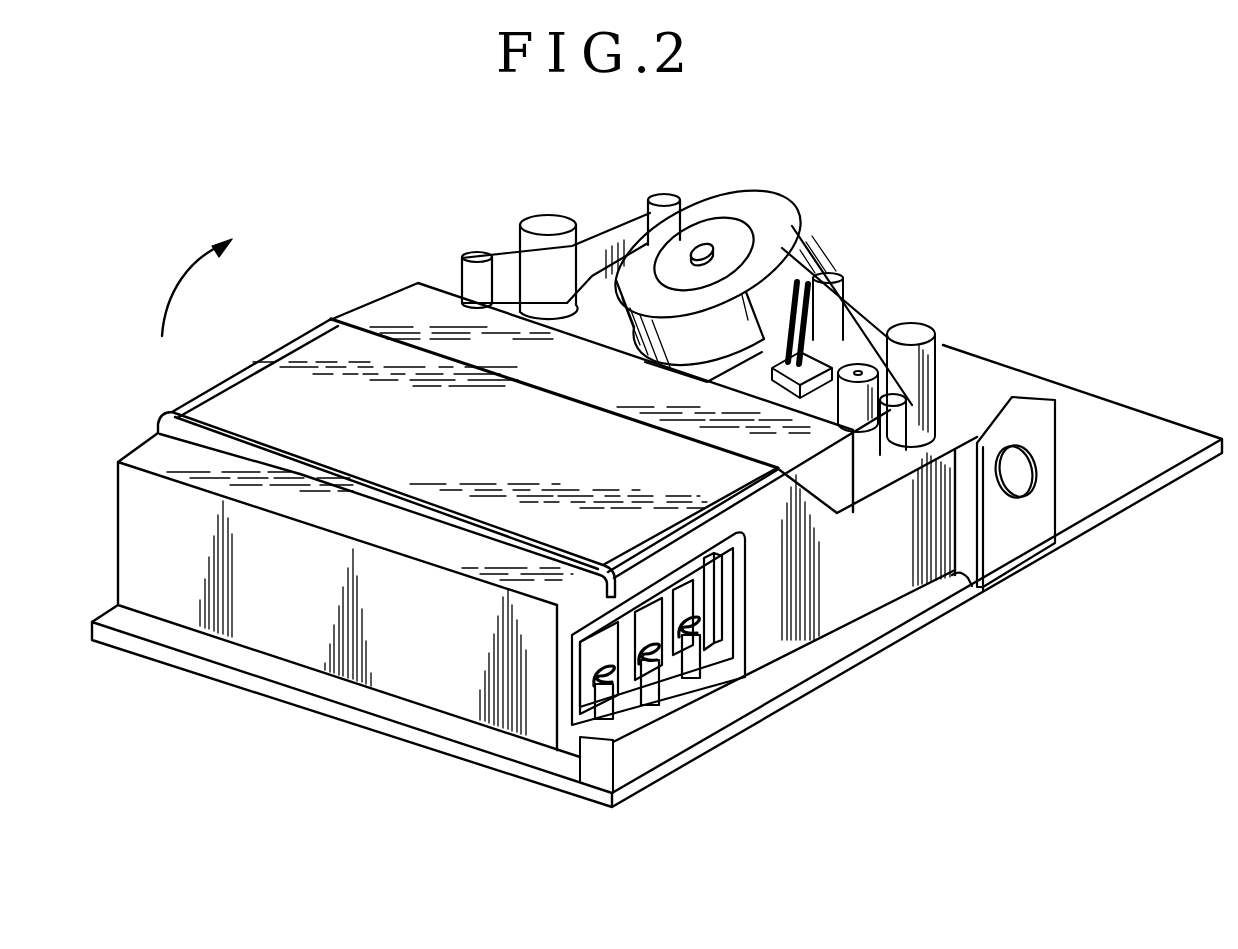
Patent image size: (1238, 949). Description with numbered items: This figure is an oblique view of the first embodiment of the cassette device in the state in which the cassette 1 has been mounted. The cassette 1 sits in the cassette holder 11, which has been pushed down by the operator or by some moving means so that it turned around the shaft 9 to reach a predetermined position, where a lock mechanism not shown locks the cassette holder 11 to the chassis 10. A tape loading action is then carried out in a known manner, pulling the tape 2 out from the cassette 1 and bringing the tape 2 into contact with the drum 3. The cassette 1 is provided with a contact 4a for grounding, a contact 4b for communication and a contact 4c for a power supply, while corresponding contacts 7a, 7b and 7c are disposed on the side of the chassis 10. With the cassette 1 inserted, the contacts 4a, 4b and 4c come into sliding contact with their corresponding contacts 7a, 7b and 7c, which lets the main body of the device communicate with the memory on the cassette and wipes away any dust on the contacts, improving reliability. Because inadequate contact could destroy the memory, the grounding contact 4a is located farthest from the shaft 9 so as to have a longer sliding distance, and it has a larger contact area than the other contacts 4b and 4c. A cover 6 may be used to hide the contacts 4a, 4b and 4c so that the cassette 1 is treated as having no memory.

The cassette 1 is at (135, 520).
The tape 2 is at (597, 258).
The drum 3 is at (755, 218).
The contact for grounding 4a is at (592, 672).
The contact for communication 4b is at (640, 663).
The contact for a power supply 4c is at (685, 640).
The cover 6 is at (718, 607).
The contact 7a is at (602, 720).
The contact 7b is at (655, 705).
The contact 7c is at (700, 680).
The shaft 9 is at (1032, 490).
The chassis 10 is at (875, 645).
The cassette holder 11 is at (298, 358).